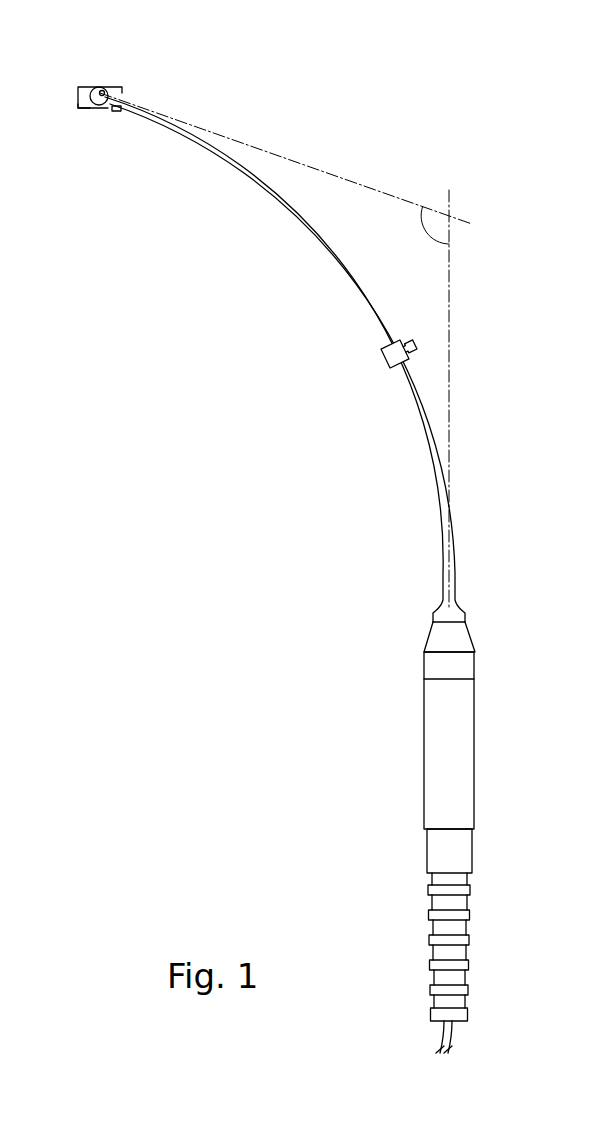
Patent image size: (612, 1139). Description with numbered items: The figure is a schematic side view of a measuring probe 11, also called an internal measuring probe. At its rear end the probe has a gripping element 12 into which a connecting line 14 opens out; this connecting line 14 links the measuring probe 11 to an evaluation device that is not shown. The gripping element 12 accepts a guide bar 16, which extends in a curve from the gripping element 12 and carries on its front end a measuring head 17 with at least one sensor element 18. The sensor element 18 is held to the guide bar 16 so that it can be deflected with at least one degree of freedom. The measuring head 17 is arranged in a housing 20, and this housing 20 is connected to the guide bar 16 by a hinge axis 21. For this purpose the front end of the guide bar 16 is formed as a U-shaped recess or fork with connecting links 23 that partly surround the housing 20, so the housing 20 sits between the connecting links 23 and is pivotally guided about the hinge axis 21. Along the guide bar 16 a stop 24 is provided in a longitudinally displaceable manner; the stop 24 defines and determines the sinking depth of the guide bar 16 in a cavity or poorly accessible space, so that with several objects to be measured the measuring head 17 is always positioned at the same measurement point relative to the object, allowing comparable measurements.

The measuring probe 11 is at (370, 158).
The gripping element 12 is at (460, 766).
The connecting line 14 is at (450, 1036).
The guide bar 16 is at (380, 331).
The measuring head 17 is at (95, 112).
The sensor element 18 is at (84, 109).
The housing 20 is at (83, 90).
The hinge axis 21 is at (104, 90).
The connecting links 23 is at (118, 111).
The stop 24 is at (380, 360).